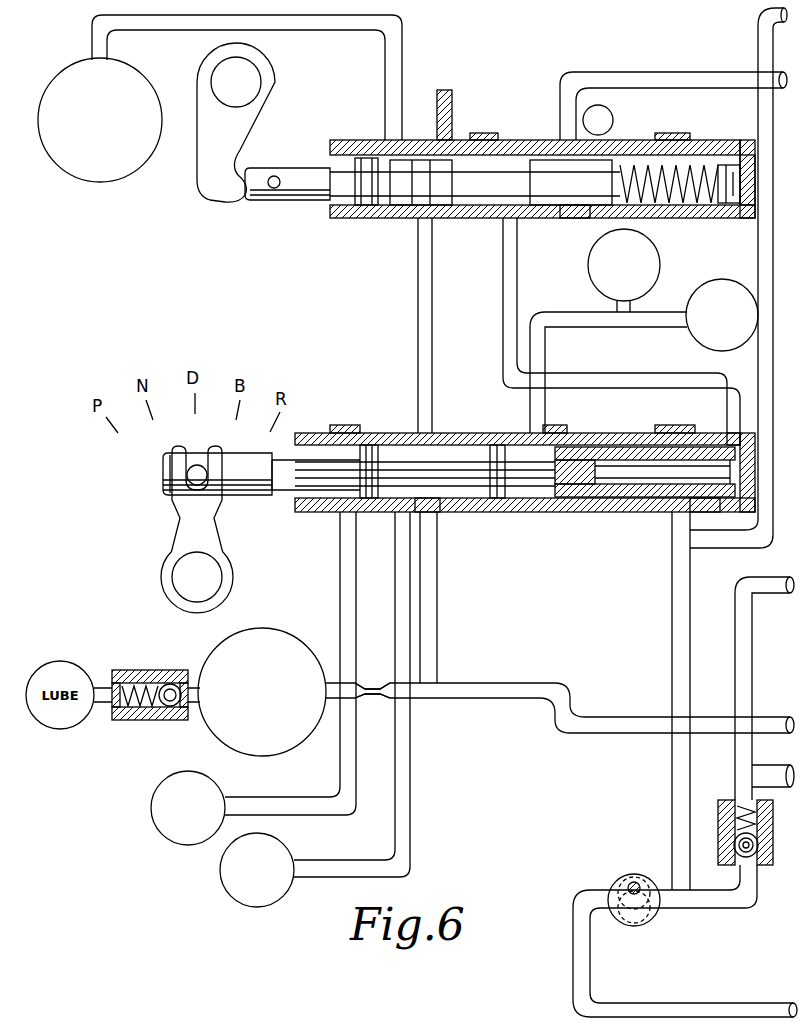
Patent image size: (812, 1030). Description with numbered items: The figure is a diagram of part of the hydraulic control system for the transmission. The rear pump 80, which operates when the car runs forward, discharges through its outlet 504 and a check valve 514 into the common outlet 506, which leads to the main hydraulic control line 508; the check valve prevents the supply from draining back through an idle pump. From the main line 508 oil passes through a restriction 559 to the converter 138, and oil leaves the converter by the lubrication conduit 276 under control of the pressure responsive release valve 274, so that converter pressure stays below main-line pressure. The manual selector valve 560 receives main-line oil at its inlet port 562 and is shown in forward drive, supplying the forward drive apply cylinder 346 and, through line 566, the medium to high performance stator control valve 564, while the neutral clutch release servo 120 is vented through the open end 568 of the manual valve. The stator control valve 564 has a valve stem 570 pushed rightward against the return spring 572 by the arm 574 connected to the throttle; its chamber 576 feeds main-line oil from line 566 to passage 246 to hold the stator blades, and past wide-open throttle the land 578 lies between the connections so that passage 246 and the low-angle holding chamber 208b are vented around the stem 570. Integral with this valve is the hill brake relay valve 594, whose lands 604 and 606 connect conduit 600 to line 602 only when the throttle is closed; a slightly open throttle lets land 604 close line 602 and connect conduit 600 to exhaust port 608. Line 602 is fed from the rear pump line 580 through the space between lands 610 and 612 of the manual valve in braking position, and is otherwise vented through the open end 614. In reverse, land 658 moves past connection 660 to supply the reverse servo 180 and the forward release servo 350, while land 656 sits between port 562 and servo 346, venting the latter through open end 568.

The stator low-angle holding chamber 208b is at (66, 72).
The passage 246 is at (402, 62).
The arm 574 is at (240, 120).
The medium to high performance stator control valve 564 is at (348, 226).
The chamber 576 is at (452, 142).
The valve stem 570 is at (305, 195).
The land 578 is at (375, 165).
The land 604 is at (512, 165).
The return spring 572 is at (690, 150).
The exhaust port 608 is at (613, 118).
The conduit 600 is at (732, 82).
The rear pump line 580 is at (758, 40).
The hill brake relay control valve 594 is at (740, 228).
The line 566 is at (432, 302).
The line 602 is at (514, 264).
The land 606 is at (592, 266).
The forward torque-establishing device release servo 350 is at (590, 278).
The reverse torque-establishing device servo 180 is at (732, 298).
The connection 660 is at (545, 420).
The manual selector valve 560 is at (536, 520).
The inlet port 562 is at (432, 520).
The land 656 is at (370, 445).
The land 658 is at (497, 445).
The land 610 is at (622, 442).
The land 612 is at (726, 428).
The open end 614 is at (730, 512).
The open end 568 is at (296, 500).
The conduit 276 is at (102, 686).
The pressure responsive release valve 274 is at (166, 684).
The converter 138 is at (332, 672).
The main hydraulic control line 508 is at (492, 683).
The restriction 559 is at (374, 688).
The neutral clutch release servo 120 is at (154, 798).
The forward torque-establishing device apply cylinder 346 is at (268, 904).
The common outlet 506 is at (735, 672).
The check valve 514 is at (766, 862).
The rear pump 80 is at (646, 874).
The rear pump outlet 504 is at (688, 884).